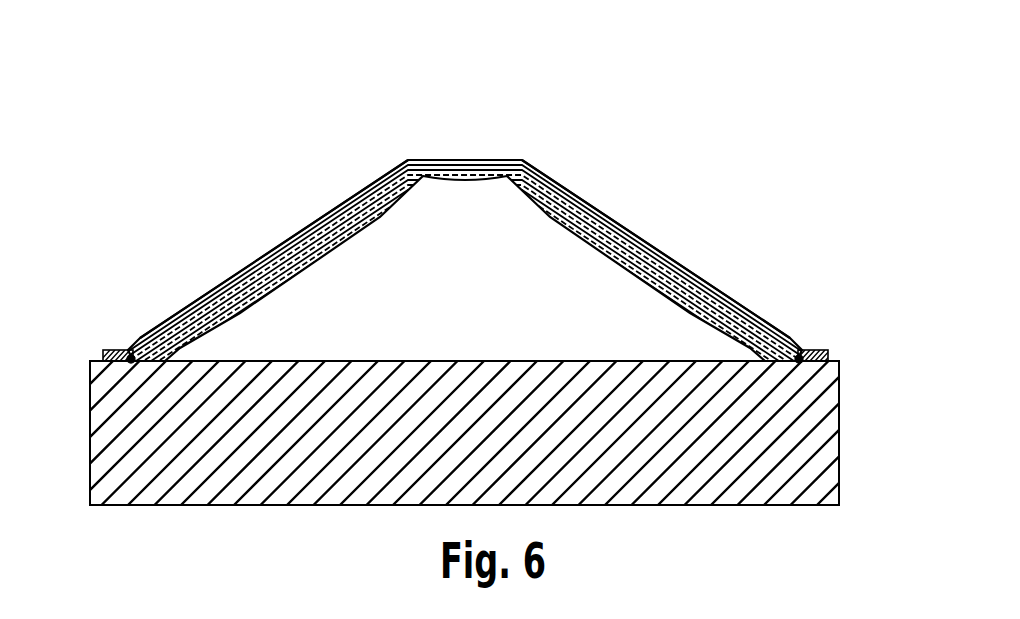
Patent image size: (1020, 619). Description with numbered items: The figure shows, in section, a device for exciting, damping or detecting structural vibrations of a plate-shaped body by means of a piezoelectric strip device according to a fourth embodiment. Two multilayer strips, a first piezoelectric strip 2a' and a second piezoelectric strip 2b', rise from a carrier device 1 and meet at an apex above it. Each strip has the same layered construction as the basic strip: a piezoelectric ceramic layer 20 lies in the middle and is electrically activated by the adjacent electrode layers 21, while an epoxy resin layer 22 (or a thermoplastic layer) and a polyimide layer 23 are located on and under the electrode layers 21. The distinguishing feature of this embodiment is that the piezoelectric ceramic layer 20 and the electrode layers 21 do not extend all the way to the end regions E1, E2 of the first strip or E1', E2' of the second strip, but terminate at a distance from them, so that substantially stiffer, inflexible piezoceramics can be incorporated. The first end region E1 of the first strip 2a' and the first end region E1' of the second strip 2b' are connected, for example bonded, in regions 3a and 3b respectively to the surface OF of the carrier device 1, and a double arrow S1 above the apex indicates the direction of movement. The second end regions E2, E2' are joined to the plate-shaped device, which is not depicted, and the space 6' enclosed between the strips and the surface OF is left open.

The carrier device 1 is at (836, 442).
The surface of carrier device OF is at (562, 356).
The connection region of first strip 3a is at (130, 360).
The connection region of second strip 3b is at (798, 363).
The piezoelectric ceramic layer 20 is at (190, 307).
The electrode layers 21 is at (312, 223).
The epoxy resin layer 22 is at (368, 182).
The polyimide layer 23 is at (228, 280).
The first piezoelectric strip 2a' is at (274, 249).
The second piezoelectric strip 2b' is at (656, 234).
The first end region of first strip E1 is at (85, 306).
The first end region of second strip E1' is at (848, 302).
The second end region of first strip E2 is at (415, 106).
The second end region of second strip E2' is at (522, 104).
The direction of movement S1 is at (474, 75).
The cavity under structure 6' is at (462, 297).